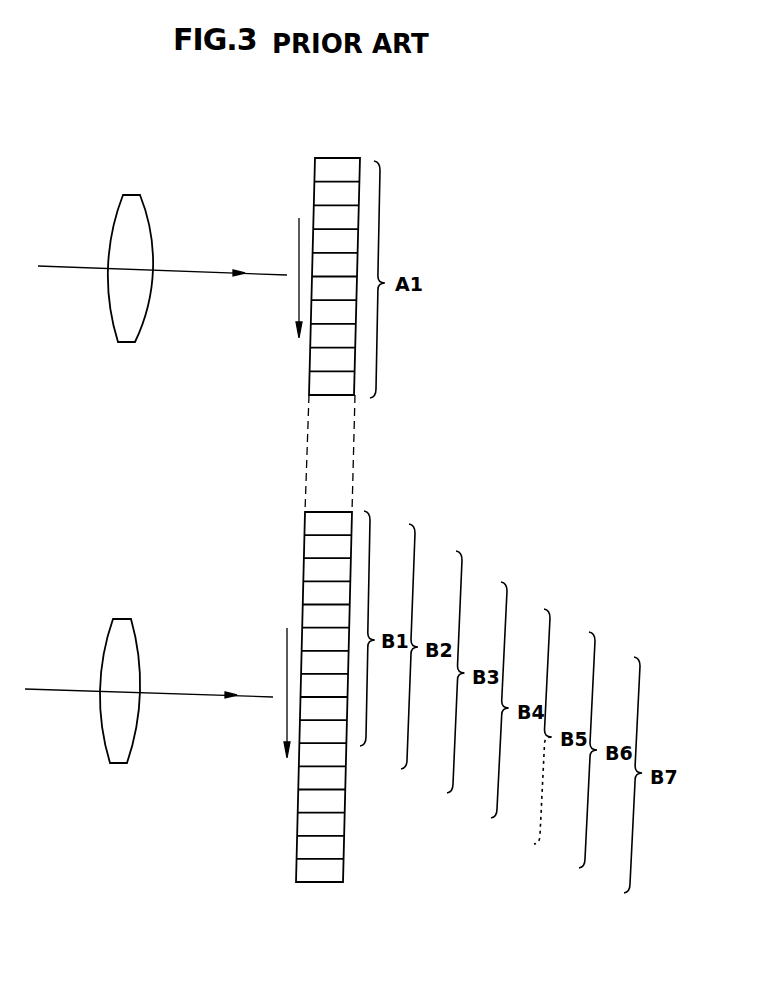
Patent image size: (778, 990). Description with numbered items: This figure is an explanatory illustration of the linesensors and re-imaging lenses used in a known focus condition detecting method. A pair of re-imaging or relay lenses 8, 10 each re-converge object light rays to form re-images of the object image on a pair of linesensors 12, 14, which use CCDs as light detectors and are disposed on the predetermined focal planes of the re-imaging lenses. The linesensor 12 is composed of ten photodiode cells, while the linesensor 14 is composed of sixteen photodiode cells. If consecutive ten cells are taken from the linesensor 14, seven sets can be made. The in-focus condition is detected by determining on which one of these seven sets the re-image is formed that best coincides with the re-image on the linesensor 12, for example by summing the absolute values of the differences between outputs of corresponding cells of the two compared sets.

The re-imaging lens 8 is at (140, 195).
The re-imaging lens 10 is at (127, 763).
The linesensor 12 is at (358, 158).
The linesensor 14 is at (352, 512).